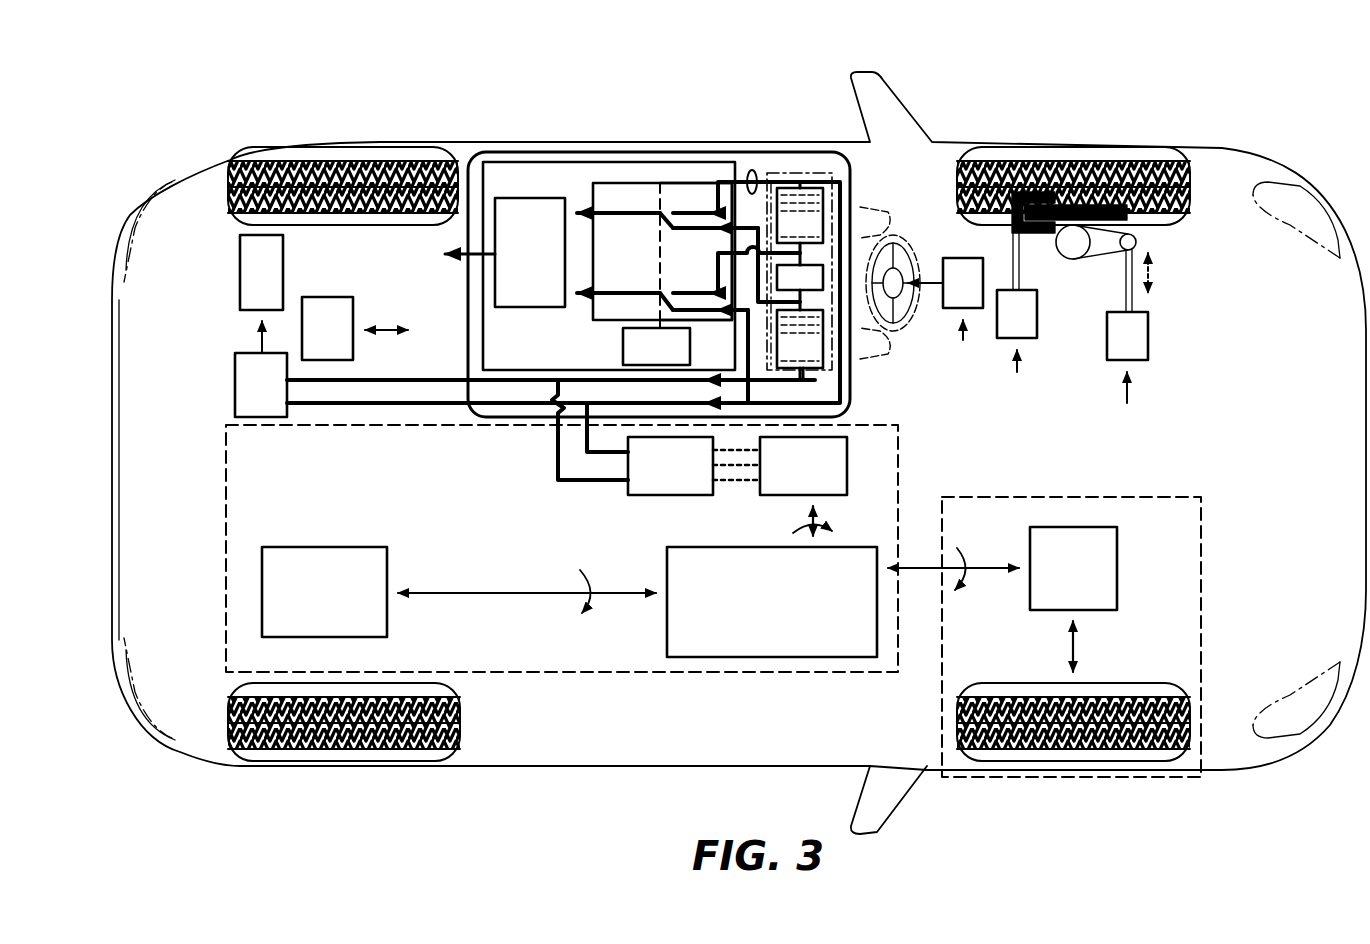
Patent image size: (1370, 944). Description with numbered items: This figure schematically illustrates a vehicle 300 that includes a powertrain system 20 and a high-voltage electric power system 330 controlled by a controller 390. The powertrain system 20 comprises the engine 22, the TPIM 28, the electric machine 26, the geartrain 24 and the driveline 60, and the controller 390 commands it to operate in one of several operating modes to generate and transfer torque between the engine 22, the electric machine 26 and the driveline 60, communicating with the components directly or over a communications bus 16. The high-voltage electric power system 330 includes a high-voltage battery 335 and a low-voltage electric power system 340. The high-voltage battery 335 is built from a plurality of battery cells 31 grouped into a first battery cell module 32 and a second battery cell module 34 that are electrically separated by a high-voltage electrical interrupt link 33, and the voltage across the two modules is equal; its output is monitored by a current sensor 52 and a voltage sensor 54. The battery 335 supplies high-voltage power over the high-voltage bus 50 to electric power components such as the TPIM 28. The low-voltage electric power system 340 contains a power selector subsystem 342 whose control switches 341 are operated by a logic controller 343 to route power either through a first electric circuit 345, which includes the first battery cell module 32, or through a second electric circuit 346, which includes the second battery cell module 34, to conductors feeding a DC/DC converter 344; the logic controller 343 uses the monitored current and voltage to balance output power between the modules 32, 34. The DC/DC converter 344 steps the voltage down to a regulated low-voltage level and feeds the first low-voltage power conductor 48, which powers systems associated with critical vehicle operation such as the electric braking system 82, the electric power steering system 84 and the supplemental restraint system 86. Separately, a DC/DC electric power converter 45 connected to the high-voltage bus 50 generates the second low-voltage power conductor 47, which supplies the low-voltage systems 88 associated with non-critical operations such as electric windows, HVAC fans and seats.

The vehicle 300 is at (1190, 278).
The high-voltage electric power system 330 is at (773, 140).
The low-voltage electric power system 340 is at (534, 150).
The DC/DC converter 344 is at (512, 264).
The power selector subsystem 342 is at (609, 264).
The control switches 341 is at (678, 264).
The logic controller 343 is at (639, 359).
The high-voltage battery 335 is at (826, 160).
The first electric circuit 345 is at (787, 162).
The current sensor 52 is at (752, 168).
The voltage sensor 54 is at (752, 182).
The battery cells 31 is at (820, 203).
The first battery cell module 32 is at (790, 241).
The high-voltage electrical interrupt link 33 is at (815, 276).
The second battery cell module 34 is at (790, 357).
The second electric circuit 346 is at (820, 380).
The first low-voltage power conductor 48 is at (430, 256).
The low-voltage systems associated with non-critical vehicle operations 88 is at (250, 282).
The second low-voltage power conductor 47 is at (253, 336).
The DC/DC electric power converter 45 is at (234, 388).
The controller 390 is at (309, 339).
The communications bus 16 is at (374, 324).
The high-voltage bus 50 is at (442, 396).
The supplemental restraint system 86 is at (951, 295).
The electric braking system 82 is at (1005, 326).
The electric power steering system 84 is at (1115, 348).
The powertrain system 20 is at (910, 460).
The engine 22 is at (311, 605).
The geartrain 24 is at (759, 614).
The electric machine 26 is at (790, 478).
The TPIM 28 is at (657, 478).
The driveline 60 is at (1024, 488).